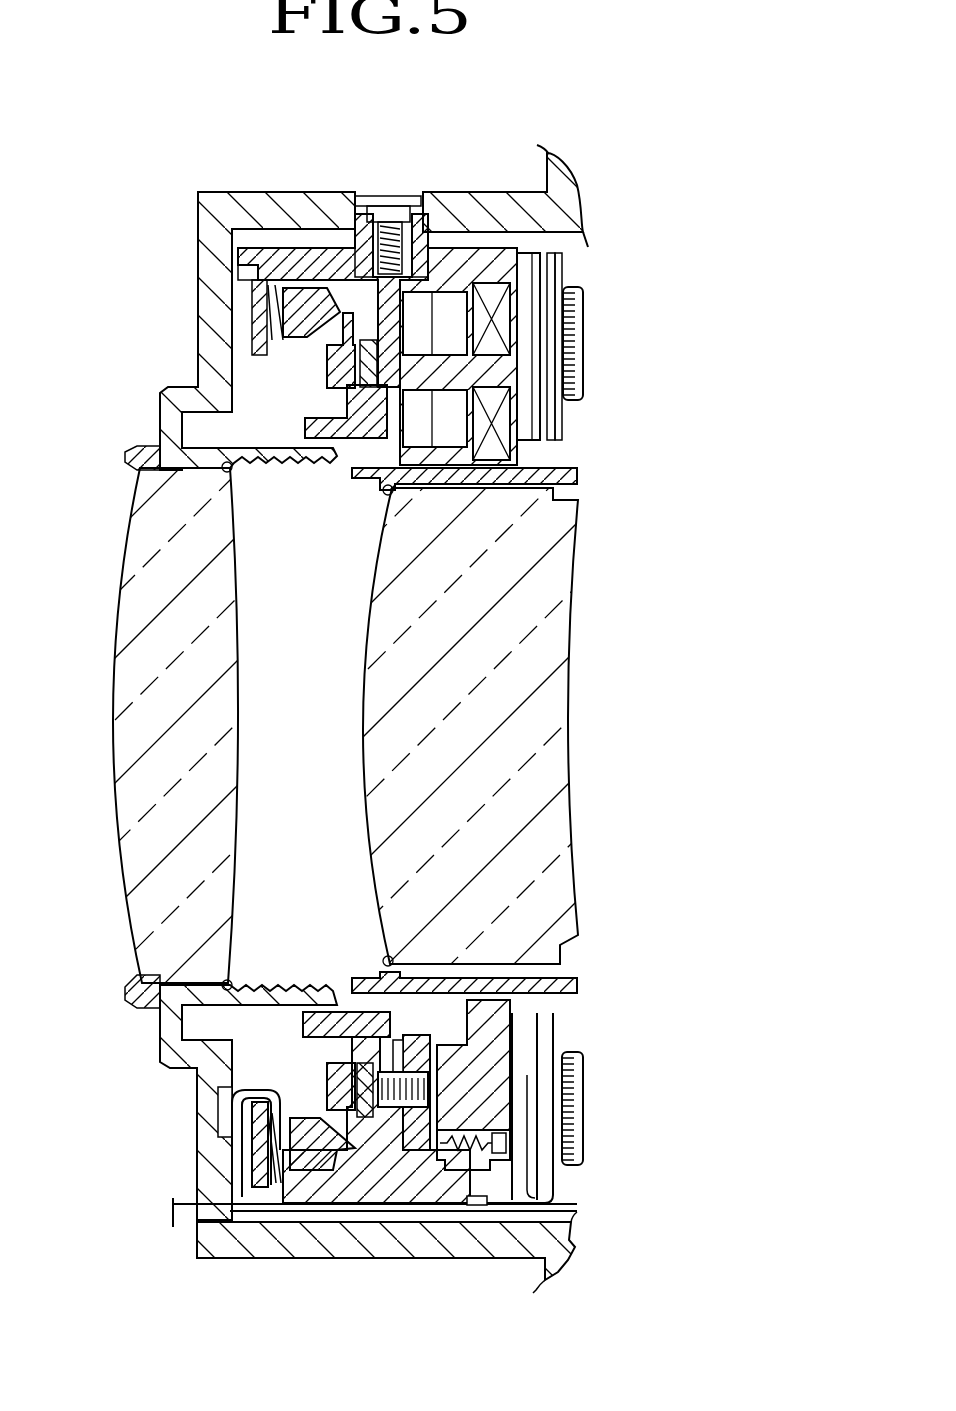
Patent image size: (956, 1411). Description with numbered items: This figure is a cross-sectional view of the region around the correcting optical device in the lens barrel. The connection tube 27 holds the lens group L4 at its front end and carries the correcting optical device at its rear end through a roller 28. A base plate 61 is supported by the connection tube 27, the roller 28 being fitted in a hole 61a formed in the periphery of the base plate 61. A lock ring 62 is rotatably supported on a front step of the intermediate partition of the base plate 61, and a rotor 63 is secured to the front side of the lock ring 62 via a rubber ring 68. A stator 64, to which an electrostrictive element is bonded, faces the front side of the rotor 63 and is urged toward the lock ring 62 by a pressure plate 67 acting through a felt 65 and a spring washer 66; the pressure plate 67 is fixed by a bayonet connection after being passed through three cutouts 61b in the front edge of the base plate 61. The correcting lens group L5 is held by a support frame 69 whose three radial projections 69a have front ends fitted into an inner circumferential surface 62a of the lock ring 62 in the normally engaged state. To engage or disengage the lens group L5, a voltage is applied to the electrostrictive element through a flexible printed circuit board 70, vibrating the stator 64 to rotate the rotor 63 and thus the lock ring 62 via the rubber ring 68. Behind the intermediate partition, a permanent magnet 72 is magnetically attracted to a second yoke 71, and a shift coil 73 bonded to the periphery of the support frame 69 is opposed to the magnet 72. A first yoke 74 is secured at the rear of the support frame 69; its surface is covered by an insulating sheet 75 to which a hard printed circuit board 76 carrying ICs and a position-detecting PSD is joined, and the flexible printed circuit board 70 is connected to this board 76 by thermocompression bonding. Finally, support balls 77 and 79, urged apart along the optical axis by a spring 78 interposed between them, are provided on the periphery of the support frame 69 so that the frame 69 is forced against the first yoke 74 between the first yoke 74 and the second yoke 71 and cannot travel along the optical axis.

The connection tube 27 is at (498, 218).
The roller 28 is at (430, 210).
The base plate 61 is at (321, 262).
The hole 61a is at (358, 262).
The cutouts 61b is at (245, 272).
The lock ring 62 is at (353, 413).
The inner circumferential surface 62a is at (337, 1012).
The rotor 63 is at (340, 1150).
The stator 64 is at (302, 1165).
The felt 65 is at (260, 1185).
The spring washer 66 is at (225, 1257).
The pressure plate 67 is at (262, 1153).
The rubber ring 68 is at (412, 1140).
The support frame 69 is at (570, 480).
The radial projections 69a is at (440, 1005).
The flexible printed circuit board 70 is at (577, 1209).
The second yoke 71 is at (470, 322).
The permanent magnet 72 is at (423, 310).
The coil 73 is at (508, 332).
The first yoke 74 is at (527, 342).
The insulating sheet 75 is at (551, 413).
The hard printed circuit board 76 is at (558, 430).
The support ball 77 is at (522, 1056).
The spring 78 is at (500, 1122).
The support ball 79 is at (508, 1148).
The lens group L4 is at (138, 686).
The correcting lens group L5 is at (542, 704).